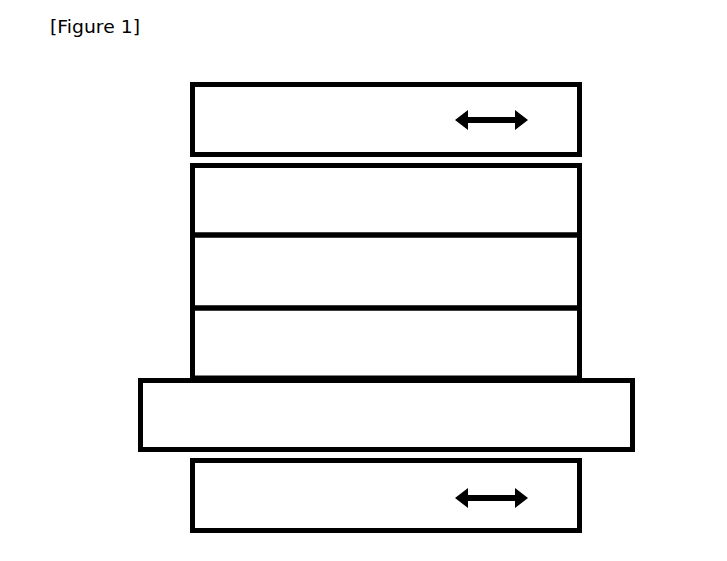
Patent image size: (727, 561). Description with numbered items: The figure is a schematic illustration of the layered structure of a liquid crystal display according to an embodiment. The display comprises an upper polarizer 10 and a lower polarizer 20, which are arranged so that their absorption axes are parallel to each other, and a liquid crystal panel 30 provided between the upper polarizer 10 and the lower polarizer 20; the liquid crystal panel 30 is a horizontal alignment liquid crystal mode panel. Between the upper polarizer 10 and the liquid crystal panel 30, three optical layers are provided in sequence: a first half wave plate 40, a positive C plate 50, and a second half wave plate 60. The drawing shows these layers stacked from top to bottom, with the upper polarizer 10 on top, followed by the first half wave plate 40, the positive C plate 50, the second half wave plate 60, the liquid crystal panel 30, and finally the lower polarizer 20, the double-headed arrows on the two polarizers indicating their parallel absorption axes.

The upper polarizer 10 is at (386, 120).
The lower polarizer 20 is at (386, 496).
The liquid crystal panel 30 is at (387, 415).
The first half wave plate 40 is at (386, 201).
The positive C plate 50 is at (386, 271).
The second half wave plate 60 is at (386, 343).